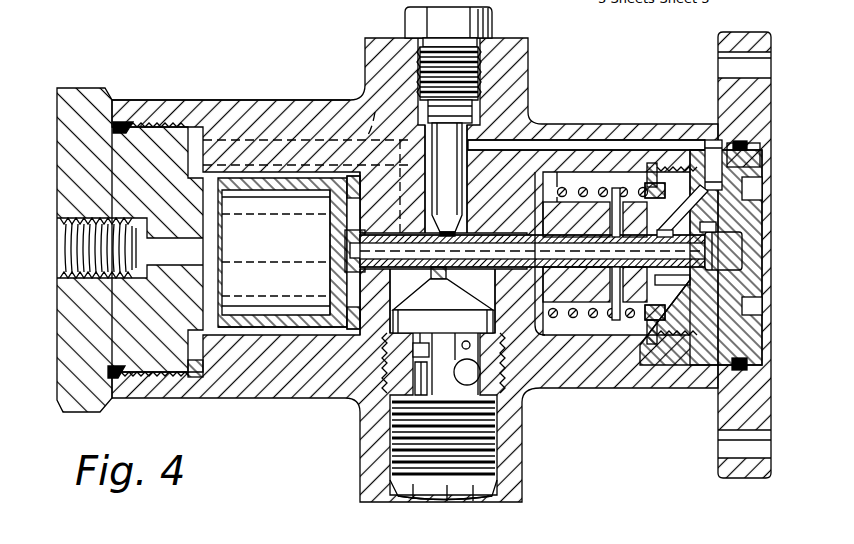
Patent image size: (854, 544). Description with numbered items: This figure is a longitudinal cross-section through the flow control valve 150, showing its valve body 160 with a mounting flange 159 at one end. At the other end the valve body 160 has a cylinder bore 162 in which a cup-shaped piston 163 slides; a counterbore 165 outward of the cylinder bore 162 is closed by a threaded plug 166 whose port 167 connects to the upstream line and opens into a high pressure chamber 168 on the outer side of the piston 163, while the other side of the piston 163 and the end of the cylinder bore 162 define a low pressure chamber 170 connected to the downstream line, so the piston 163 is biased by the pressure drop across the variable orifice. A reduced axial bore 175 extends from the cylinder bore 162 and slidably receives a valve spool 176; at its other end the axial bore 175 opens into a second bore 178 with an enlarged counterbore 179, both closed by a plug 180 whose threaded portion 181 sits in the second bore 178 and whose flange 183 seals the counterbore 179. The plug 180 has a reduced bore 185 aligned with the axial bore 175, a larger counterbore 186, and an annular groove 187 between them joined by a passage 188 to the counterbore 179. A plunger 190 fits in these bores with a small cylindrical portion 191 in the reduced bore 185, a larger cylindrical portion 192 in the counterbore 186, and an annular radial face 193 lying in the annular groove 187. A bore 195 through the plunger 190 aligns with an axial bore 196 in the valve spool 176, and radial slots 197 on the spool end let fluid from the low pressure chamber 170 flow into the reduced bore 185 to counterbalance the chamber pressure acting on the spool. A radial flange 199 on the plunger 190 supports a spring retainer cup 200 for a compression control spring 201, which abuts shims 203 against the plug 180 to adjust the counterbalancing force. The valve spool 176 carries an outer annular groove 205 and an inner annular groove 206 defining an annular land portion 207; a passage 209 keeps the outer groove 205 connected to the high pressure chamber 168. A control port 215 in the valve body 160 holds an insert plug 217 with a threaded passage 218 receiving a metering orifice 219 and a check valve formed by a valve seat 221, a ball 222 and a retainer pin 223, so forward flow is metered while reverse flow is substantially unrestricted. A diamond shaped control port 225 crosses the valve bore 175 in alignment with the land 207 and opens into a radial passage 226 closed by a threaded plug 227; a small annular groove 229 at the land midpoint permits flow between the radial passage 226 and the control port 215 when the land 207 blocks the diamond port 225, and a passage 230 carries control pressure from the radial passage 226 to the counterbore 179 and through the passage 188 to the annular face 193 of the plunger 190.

The flow control valve 150 is at (232, 92).
The mounting flange 159 is at (722, 42).
The valve body 160 is at (300, 106).
The cylinder bore 162 is at (268, 325).
The piston 163 is at (332, 277).
The counterbore 165 is at (200, 376).
The threaded plug 166 is at (76, 92).
The port 167 is at (70, 262).
The high pressure chamber 168 is at (287, 258).
The low pressure chamber 170 is at (350, 205).
The axial bore 175 is at (472, 242).
The valve spool 176 is at (372, 268).
The second bore 178 is at (604, 184).
The counterbore 179 is at (712, 142).
The plug 180 is at (753, 215).
The threaded portion 181 is at (690, 346).
The flange 183 is at (748, 158).
The reduced bore 185 is at (748, 278).
The counterbore 186 is at (652, 282).
The annular groove 187 is at (672, 280).
The passage 188 is at (660, 195).
The plunger 190 is at (622, 320).
The small cylindrical portion 191 is at (714, 240).
The larger cylindrical portion 192 is at (632, 232).
The annular radial face 193 is at (694, 222).
The bore 195 is at (594, 238).
The axial bore 196 is at (500, 270).
The radial slots 197 is at (348, 245).
The radial flange 199 is at (583, 272).
The spring retainer cup 200 is at (592, 308).
The compression control spring 201 is at (547, 333).
The shims 203 is at (653, 345).
The outer annular groove 205 is at (408, 233).
The inner annular groove 206 is at (470, 233).
The annular land portion 207 is at (447, 269).
The passage 209 is at (306, 164).
The control port 215 is at (467, 488).
The insert plug 217 is at (387, 395).
The threaded passage 218 is at (412, 350).
The metering orifice 219 is at (412, 372).
The valve seat 221 is at (472, 404).
The ball 222 is at (482, 372).
The retainer pin 223 is at (470, 320).
The diamond shaped control port 225 is at (455, 226).
The radial passage 226 is at (458, 175).
The threaded plug 227 is at (492, 18).
The small annular groove 229 is at (440, 283).
The passage 230 is at (620, 140).